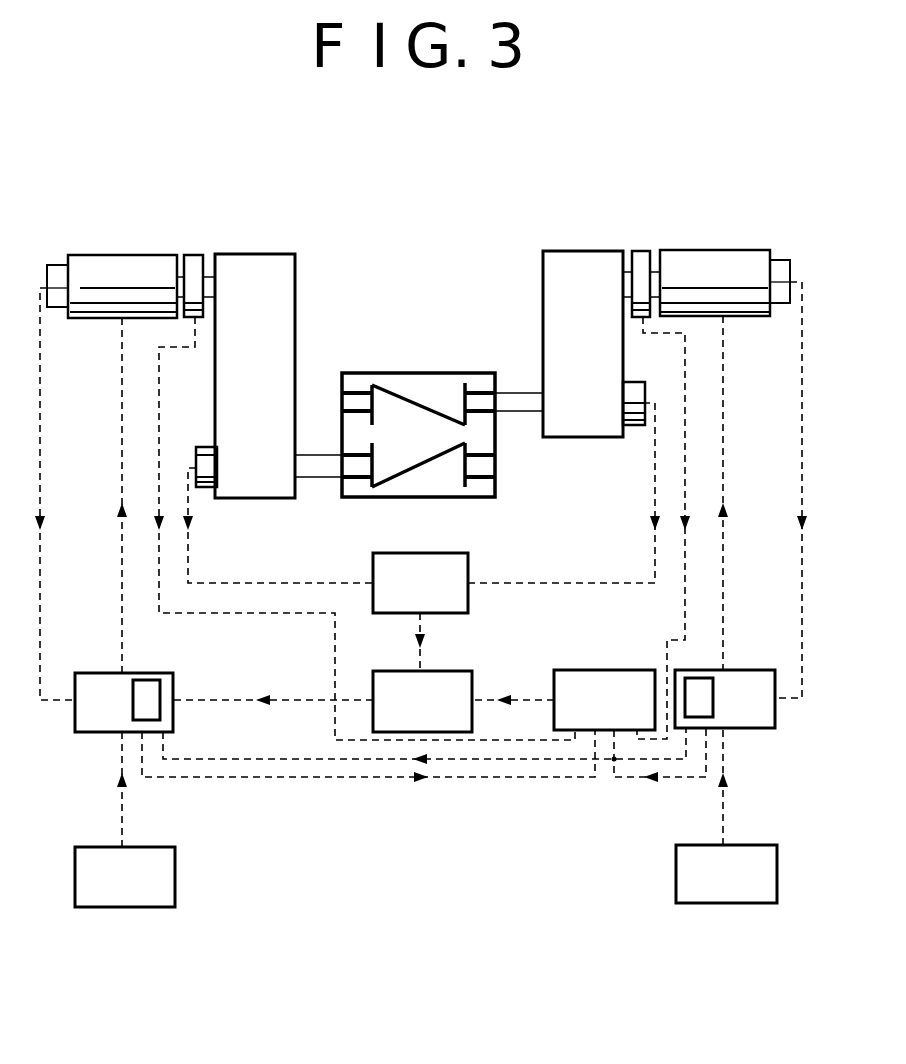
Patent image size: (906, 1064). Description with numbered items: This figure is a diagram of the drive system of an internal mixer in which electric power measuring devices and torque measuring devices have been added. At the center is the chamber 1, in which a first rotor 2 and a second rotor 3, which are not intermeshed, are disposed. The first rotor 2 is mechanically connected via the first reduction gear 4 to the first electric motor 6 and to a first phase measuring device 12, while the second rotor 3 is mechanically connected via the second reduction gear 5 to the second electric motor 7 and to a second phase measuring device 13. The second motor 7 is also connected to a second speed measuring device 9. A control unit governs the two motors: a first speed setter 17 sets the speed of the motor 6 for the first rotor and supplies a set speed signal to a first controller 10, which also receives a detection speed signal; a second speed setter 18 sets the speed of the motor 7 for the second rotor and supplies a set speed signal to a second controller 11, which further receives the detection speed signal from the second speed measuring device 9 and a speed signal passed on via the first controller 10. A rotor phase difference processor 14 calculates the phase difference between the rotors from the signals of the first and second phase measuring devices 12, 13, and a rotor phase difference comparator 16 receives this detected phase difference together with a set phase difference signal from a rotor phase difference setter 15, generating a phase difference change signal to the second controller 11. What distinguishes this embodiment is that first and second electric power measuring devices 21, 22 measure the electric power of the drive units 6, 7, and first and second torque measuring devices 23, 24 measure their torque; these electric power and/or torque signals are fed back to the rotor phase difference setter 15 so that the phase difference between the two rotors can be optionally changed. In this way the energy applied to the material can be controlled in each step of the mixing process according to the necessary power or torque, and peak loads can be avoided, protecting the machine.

The chamber 1 is at (392, 373).
The first rotor 2 is at (432, 410).
The second rotor 3 is at (432, 460).
The first reduction gear 4 is at (578, 437).
The second reduction gear 5 is at (262, 498).
The first electric motor 6 is at (718, 250).
The second electric motor 7 is at (120, 255).
The second speed measuring device 9 is at (57, 265).
The first controller 10 is at (765, 670).
The second controller 11 is at (92, 673).
The first phase measuring device 12 is at (636, 425).
The second phase measuring device 13 is at (203, 490).
The rotor phase difference processor 14 is at (458, 613).
The rotor phase difference setter 15 is at (623, 670).
The rotor phase difference comparator 16 is at (385, 671).
The first speed setter 17 is at (683, 845).
The second speed setter 18 is at (162, 847).
The first electric power measuring device 21 is at (713, 706).
The second electric power measuring device 22 is at (153, 680).
The first torque measuring device 23 is at (641, 251).
The second torque measuring device 24 is at (193, 255).